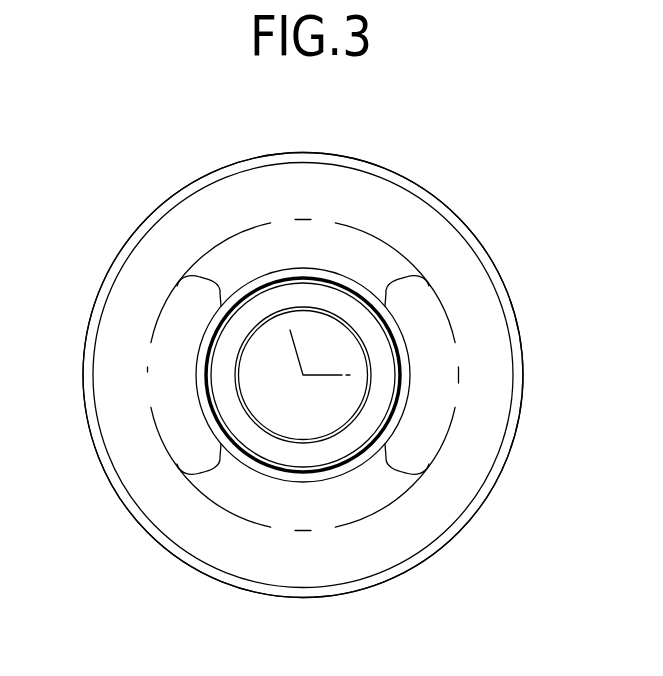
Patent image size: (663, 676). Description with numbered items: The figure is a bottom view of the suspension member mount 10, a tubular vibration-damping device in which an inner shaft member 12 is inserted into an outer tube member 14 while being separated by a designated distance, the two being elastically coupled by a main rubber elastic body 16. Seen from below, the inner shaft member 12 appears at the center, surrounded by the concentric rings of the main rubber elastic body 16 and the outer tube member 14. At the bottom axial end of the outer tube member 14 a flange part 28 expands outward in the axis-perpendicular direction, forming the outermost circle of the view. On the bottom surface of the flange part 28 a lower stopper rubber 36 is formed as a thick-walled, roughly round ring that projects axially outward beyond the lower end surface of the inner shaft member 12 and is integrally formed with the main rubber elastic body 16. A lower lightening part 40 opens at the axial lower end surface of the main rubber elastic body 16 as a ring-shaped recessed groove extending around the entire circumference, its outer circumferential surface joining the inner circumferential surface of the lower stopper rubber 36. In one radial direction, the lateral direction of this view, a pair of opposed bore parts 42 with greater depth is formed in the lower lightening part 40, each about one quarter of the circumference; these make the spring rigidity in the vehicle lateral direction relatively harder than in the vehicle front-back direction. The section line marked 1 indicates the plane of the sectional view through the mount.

The section line 1- 1 is at (190, 117).
The suspension member mount 10 is at (503, 162).
The inner shaft member 12 is at (259, 466).
The outer tube member 14 is at (512, 479).
The main rubber elastic body 16 is at (226, 257).
The flange part 28 is at (378, 170).
The lower stopper rubber 36 is at (448, 251).
The lower lightening part 40 is at (373, 510).
The bore parts 42 is at (457, 345).